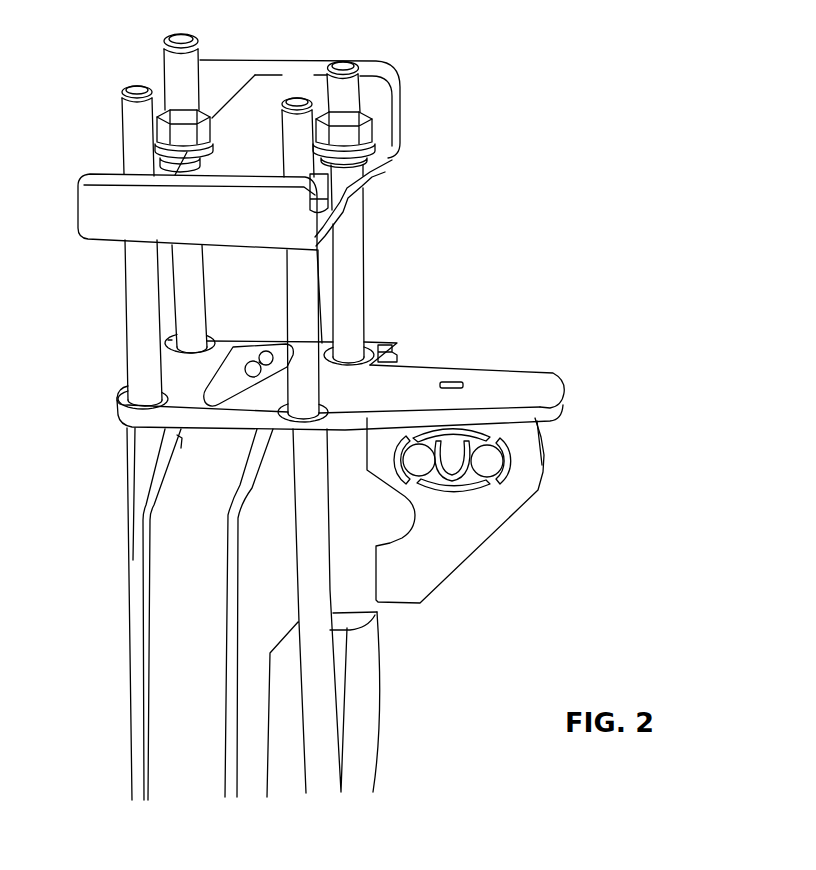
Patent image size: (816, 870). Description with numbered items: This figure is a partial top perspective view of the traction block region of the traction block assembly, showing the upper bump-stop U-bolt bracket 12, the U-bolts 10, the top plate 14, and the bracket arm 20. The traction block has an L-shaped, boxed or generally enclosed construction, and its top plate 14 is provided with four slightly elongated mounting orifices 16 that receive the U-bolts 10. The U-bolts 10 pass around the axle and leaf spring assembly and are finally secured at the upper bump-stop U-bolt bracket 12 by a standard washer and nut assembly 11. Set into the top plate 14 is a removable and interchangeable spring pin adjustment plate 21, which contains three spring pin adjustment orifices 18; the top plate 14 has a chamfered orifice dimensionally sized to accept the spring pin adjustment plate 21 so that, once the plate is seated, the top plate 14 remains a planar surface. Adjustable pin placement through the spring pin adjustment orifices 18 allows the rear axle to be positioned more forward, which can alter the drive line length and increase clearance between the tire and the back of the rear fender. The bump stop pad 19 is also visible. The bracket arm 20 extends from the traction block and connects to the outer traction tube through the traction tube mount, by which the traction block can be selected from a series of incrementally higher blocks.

The U-bolt 10 is at (353, 281).
The washer and nut assembly 11 is at (388, 157).
The upper bump-stop U-bolt bracket 12 is at (378, 80).
The top plate 14 is at (182, 388).
The mounting orifices 16 is at (126, 397).
The spring pin adjustment orifices 18 is at (265, 356).
The bump stop pad 19 is at (560, 405).
The bracket arm 20 is at (140, 647).
The spring pin adjustment plate 21 is at (387, 341).